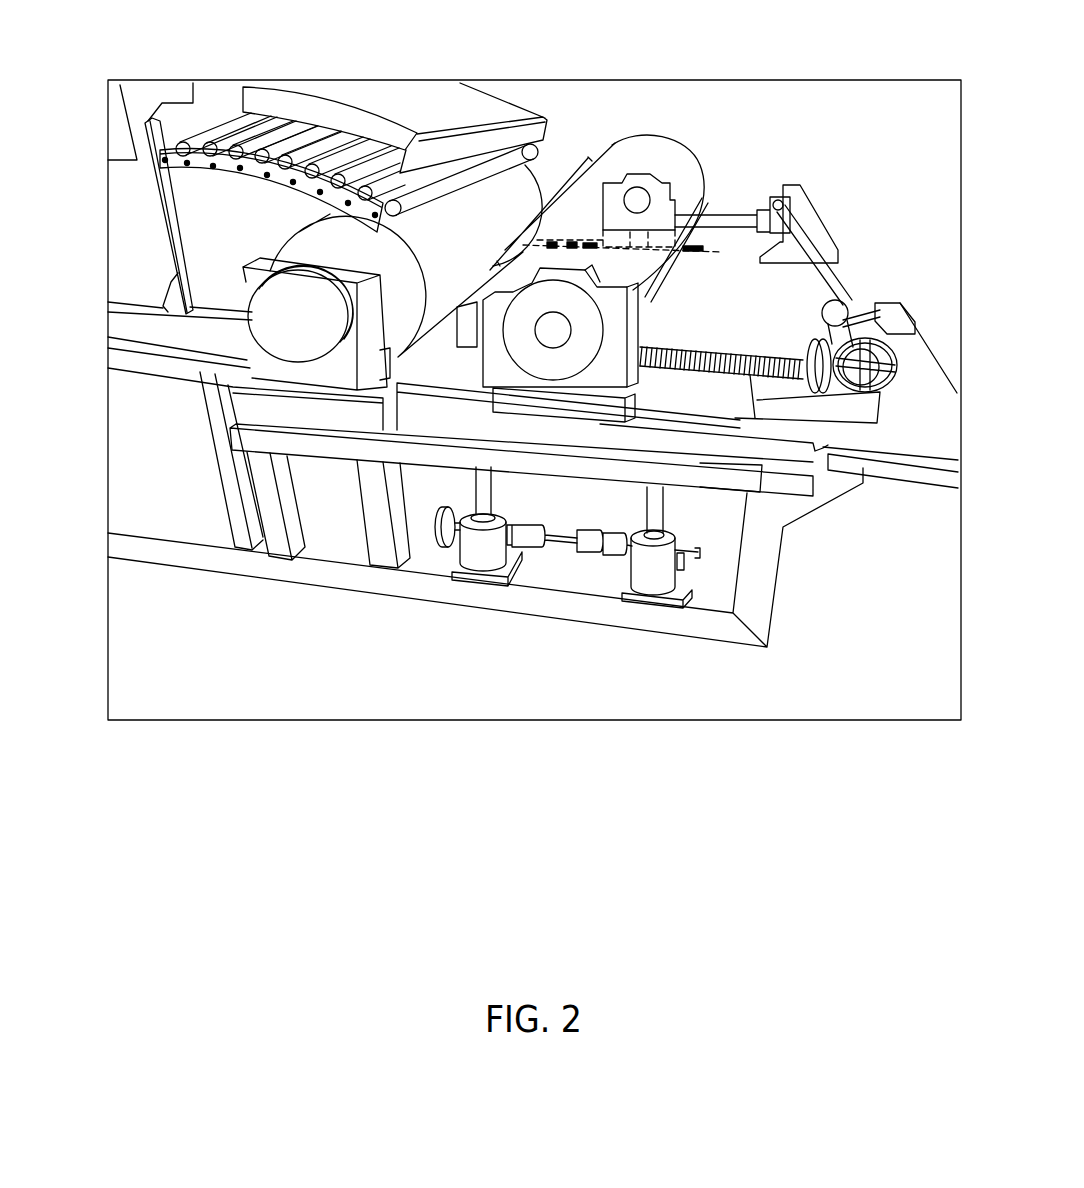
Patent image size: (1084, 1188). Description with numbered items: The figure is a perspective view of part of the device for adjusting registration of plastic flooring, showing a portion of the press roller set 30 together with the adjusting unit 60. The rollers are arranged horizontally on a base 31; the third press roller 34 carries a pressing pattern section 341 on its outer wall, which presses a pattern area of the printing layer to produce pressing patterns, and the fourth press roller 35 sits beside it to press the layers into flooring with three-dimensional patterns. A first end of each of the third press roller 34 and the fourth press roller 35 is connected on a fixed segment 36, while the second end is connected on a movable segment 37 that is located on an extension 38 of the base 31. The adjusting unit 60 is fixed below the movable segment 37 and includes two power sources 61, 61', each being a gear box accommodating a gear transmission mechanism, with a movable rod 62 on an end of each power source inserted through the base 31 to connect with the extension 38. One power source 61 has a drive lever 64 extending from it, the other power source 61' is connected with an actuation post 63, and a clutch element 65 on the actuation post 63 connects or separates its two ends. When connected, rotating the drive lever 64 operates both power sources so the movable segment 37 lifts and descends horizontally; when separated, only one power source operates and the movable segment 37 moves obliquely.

The press roller set 30 is at (263, 628).
The base 31 is at (163, 553).
The third press roller 34 is at (655, 145).
The pressing pattern section 341 is at (618, 148).
The fourth press roller 35 is at (293, 233).
The fixed segment 36 is at (658, 187).
The movable segment 37 is at (518, 342).
The extension 38 is at (740, 445).
The adjusting unit 60 is at (535, 683).
The power source 61 is at (475, 635).
The power source 61' is at (661, 667).
The movable rod 62 is at (660, 518).
The actuation post 63 is at (563, 540).
The drive lever 64 is at (452, 548).
The clutch element 65 is at (617, 556).